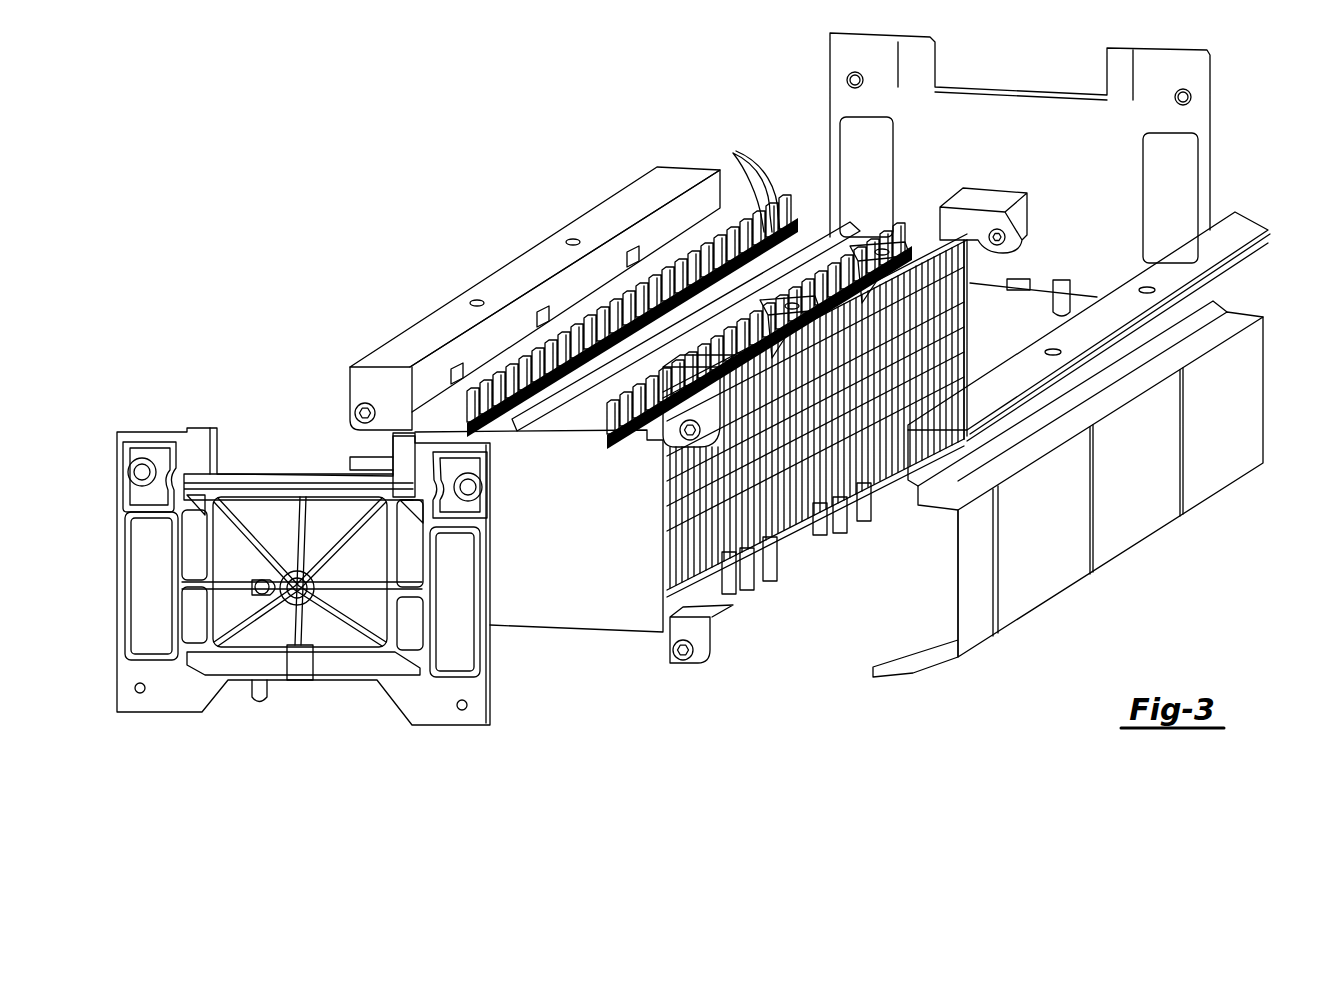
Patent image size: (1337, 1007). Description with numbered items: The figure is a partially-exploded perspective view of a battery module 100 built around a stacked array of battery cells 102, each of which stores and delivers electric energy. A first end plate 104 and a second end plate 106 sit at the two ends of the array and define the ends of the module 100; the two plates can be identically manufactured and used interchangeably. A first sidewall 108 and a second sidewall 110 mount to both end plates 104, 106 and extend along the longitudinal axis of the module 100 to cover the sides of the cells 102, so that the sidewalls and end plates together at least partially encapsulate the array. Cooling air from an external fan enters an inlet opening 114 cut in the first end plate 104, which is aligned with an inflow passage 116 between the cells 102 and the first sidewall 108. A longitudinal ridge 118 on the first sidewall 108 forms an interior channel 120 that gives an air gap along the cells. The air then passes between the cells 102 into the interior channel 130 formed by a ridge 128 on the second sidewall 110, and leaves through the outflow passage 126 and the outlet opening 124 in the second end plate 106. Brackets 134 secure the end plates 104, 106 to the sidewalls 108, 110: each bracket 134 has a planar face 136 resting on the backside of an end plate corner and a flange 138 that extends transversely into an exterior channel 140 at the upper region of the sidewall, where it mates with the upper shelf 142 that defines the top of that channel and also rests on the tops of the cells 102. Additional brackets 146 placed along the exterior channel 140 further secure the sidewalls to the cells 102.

The battery module 100 is at (326, 120).
The battery cells 102 is at (737, 152).
The first end plate 104 is at (403, 704).
The second end plate 106 is at (1002, 98).
The first sidewall 108 is at (1136, 524).
The second sidewall 110 is at (349, 466).
The inlet opening 114 is at (470, 652).
The inflow passage 116 is at (825, 624).
The ridge 118 is at (957, 568).
The interior channel 120 is at (905, 609).
The outlet opening 124 is at (843, 152).
The outflow passage 126 is at (793, 212).
The ridge 128 is at (367, 473).
The interior channel 130 is at (366, 462).
The bracket 134 is at (349, 396).
The planar face 136 is at (358, 375).
The flange 138 is at (987, 190).
The exterior channel 140 is at (1240, 268).
The upper shelf 142 is at (1238, 228).
The additional brackets 146 is at (857, 247).